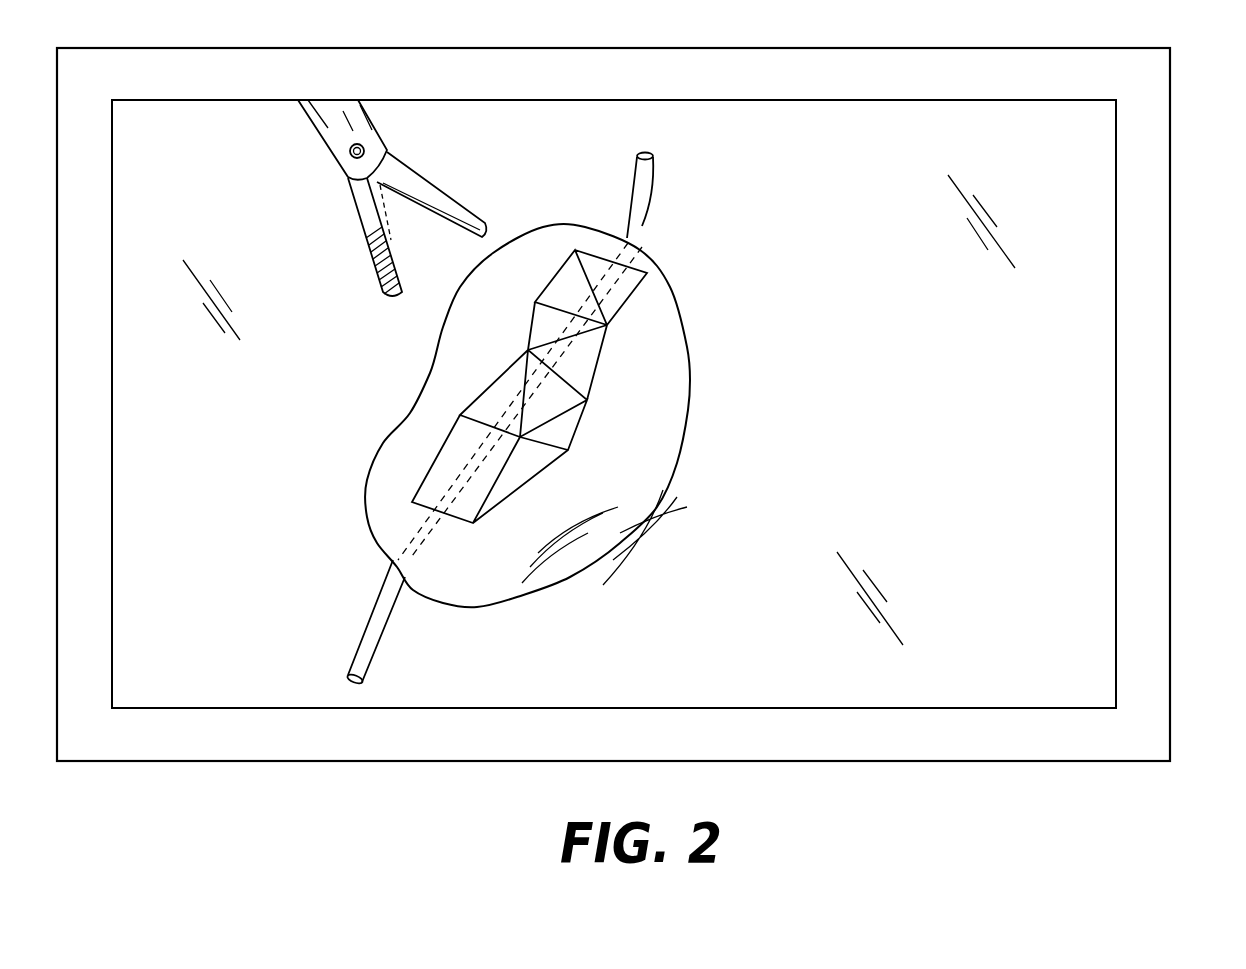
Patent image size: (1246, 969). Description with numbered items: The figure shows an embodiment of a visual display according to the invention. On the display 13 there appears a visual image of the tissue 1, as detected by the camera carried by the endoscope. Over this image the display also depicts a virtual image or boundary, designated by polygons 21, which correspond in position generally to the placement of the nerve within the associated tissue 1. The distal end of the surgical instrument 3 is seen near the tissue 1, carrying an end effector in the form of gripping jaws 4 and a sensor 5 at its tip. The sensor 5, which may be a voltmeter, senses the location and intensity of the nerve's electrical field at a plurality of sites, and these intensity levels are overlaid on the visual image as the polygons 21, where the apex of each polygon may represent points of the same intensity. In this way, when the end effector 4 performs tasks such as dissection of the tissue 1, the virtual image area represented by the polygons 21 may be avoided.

The tissue 1 is at (660, 300).
The surgical instrument 3 is at (370, 200).
The gripping jaws 4 is at (477, 226).
The sensor 5 is at (381, 292).
The display 13 is at (1075, 360).
The polygons 21 is at (432, 462).